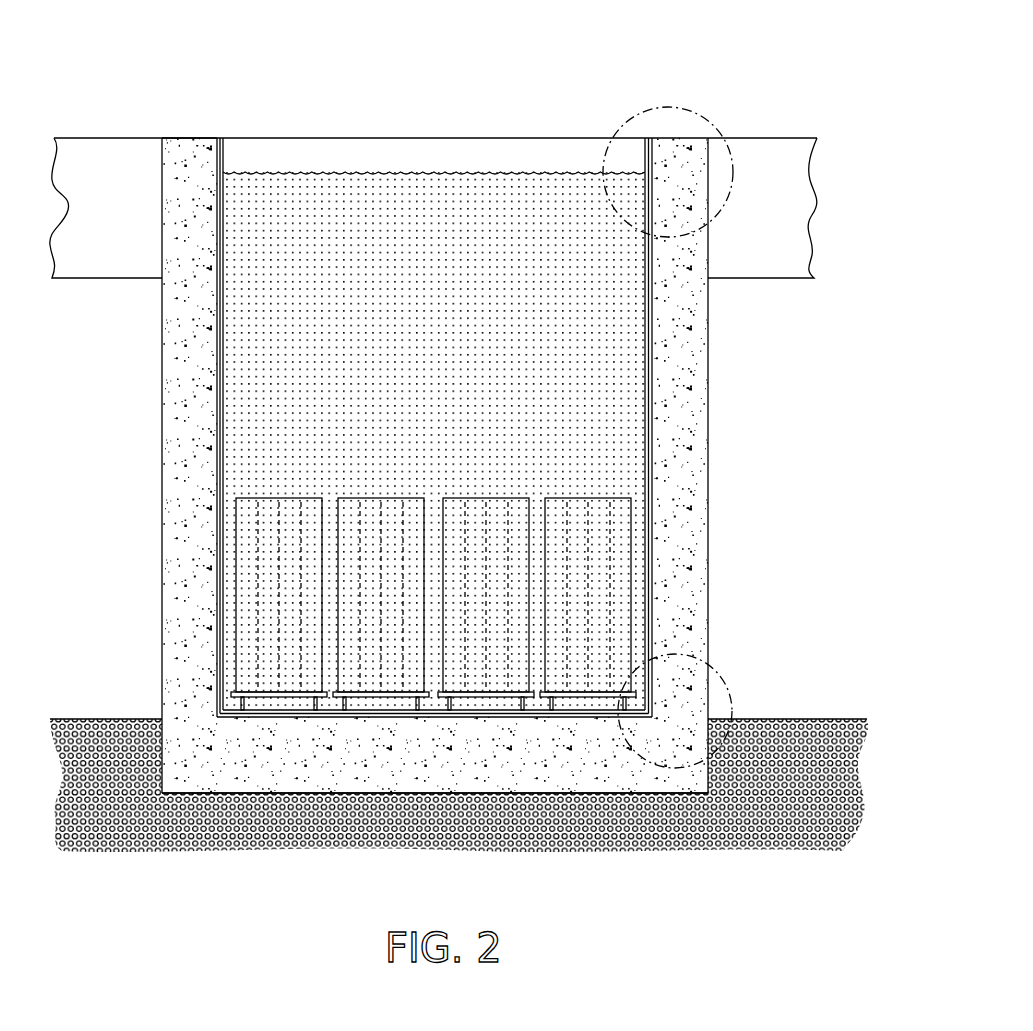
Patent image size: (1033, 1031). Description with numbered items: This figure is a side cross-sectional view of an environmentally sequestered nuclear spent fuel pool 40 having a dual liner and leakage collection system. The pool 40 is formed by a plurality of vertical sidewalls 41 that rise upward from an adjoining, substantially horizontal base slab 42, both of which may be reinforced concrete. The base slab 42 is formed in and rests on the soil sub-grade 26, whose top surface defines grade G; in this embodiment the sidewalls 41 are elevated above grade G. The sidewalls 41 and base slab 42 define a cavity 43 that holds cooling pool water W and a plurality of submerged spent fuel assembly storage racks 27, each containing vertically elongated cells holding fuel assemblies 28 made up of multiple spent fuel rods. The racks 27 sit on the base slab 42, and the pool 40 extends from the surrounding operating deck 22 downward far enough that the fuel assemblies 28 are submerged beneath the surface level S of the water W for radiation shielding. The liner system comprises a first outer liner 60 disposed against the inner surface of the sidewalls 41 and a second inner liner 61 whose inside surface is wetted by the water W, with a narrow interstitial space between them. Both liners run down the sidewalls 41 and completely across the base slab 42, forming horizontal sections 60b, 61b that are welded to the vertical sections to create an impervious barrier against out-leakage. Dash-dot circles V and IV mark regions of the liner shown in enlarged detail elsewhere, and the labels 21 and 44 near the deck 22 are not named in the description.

The spent fuel pool 40 is at (563, 88).
The operating deck 22 is at (121, 137).
The wall top 44 is at (205, 137).
The surface level S is at (470, 172).
The detail circle V is at (663, 107).
The deck slab 21 is at (95, 255).
The vertical sidewalls 41 is at (178, 322).
The cavity 43 is at (222, 352).
The pool water W is at (444, 343).
The second inner liner 61 is at (646, 334).
The first outer liner 60 is at (652, 378).
The nuclear spent fuel assembly storage racks 27 is at (475, 497).
The fuel assemblies 28 is at (598, 556).
The detail circle IV is at (728, 668).
The grade G is at (125, 718).
The soil sub-grade 26 is at (147, 817).
The base slab 42 is at (268, 757).
The horizontal section of inner liner 61b is at (542, 712).
The horizontal section of outer liner 60b is at (540, 720).